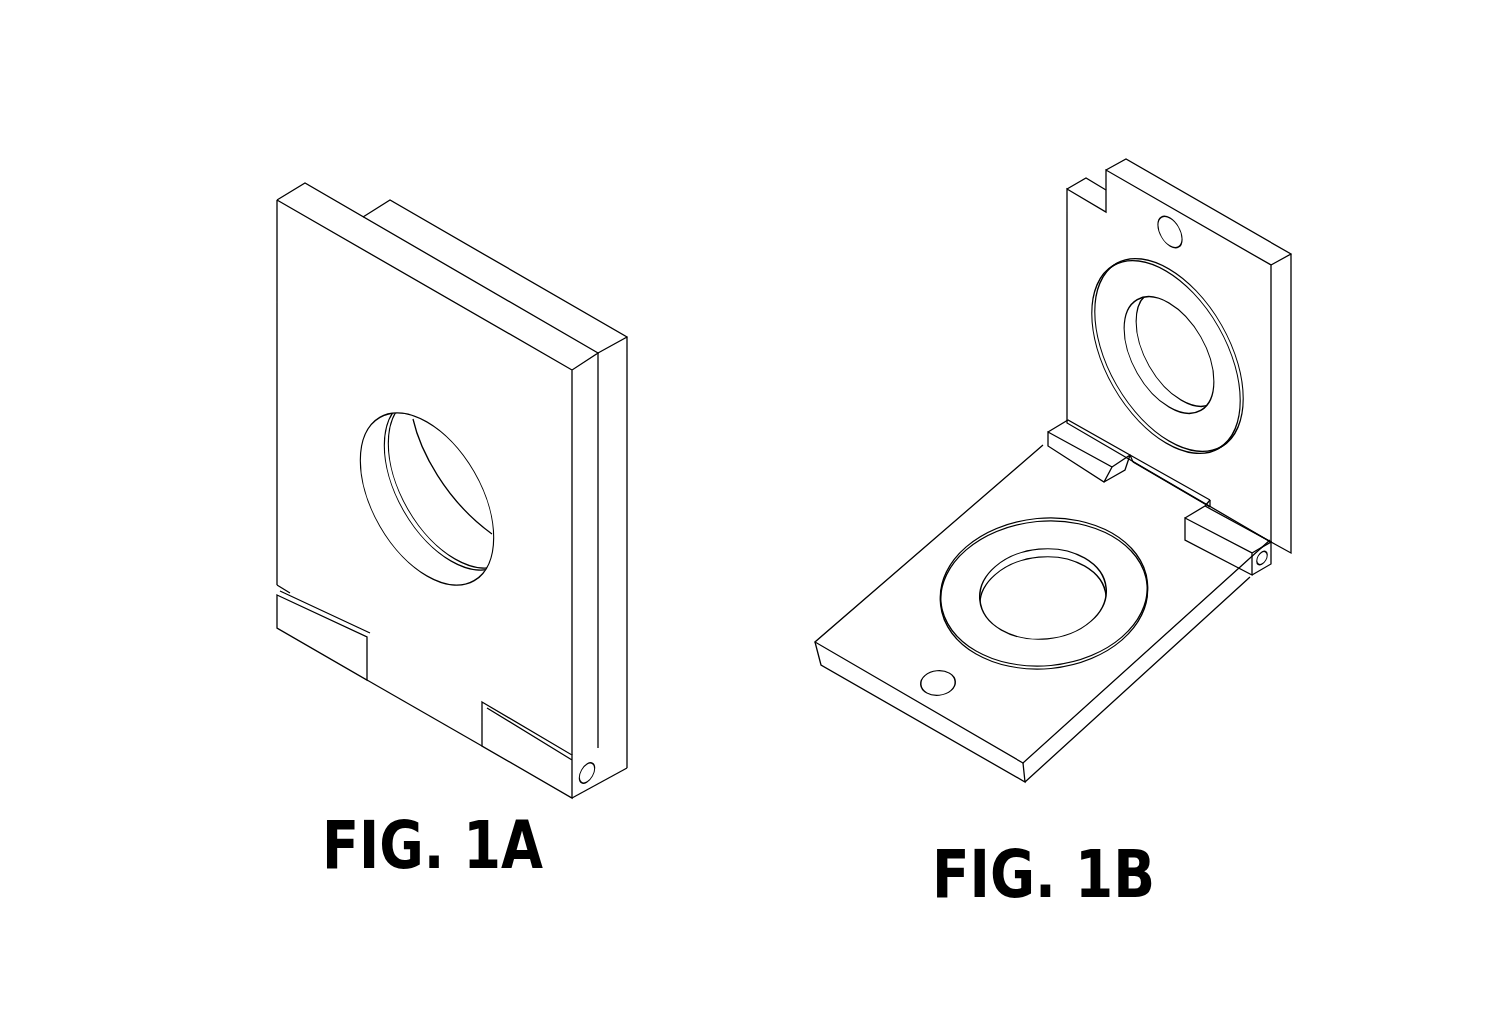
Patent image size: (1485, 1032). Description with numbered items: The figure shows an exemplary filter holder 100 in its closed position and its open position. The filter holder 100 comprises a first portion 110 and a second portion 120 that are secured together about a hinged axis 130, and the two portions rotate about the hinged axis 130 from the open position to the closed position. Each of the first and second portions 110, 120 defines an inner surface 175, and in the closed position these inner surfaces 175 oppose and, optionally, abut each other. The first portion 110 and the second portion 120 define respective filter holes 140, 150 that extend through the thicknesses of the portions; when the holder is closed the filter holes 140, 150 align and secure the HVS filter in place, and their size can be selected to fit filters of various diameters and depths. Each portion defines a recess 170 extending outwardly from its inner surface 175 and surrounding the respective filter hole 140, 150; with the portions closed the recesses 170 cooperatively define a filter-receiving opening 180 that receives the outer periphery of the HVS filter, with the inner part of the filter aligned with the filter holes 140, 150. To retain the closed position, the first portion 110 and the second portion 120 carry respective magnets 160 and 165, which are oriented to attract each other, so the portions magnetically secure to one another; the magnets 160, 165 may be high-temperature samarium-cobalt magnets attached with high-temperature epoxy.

In FIG. 1A, the filter holder 100 is at (360, 157).
In FIG. 1B, the filter holder 100 is at (940, 243).
In FIG. 1A, the first portion 110 is at (275, 393).
In FIG. 1B, the first portion 110 is at (1184, 650).
In FIG. 1A, the second portion 120 is at (629, 432).
In FIG. 1B, the second portion 120 is at (1296, 378).
In FIG. 1B, the hinged axis 130 is at (1268, 558).
In FIG. 1B, the filter hole 140 is at (1025, 605).
In FIG. 1B, the filter hole 150 is at (1160, 343).
In FIG. 1B, the magnet 160 is at (918, 692).
In FIG. 1B, the magnet 165 is at (1170, 218).
In FIG. 1B, the recess 170 is at (1182, 422).
In FIG. 1B, the inner surface 175 is at (1234, 467).
In FIG. 1A, the filter-receiving opening 180 is at (415, 516).